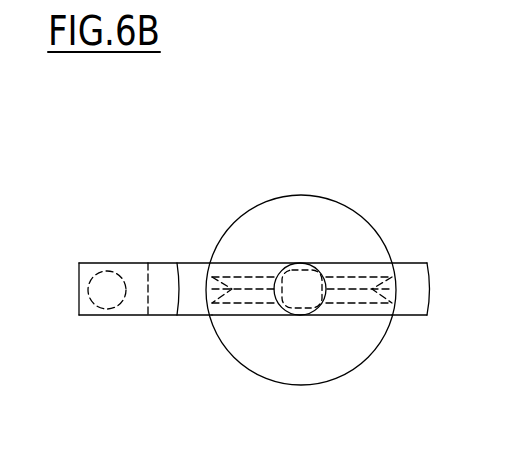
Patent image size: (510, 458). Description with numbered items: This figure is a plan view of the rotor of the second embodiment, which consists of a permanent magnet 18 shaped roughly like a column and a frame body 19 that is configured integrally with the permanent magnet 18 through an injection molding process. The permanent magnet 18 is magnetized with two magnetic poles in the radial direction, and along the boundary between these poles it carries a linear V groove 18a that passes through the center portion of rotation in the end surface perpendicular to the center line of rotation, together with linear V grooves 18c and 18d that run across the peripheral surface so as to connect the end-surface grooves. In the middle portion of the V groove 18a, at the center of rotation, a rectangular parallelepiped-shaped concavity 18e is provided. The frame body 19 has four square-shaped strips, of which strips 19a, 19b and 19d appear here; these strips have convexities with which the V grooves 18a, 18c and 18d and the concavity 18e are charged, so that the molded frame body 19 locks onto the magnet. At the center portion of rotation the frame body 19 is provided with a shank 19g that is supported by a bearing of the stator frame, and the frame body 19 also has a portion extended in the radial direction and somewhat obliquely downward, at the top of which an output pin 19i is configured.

The permanent magnet 18 is at (355, 196).
The linear V groove 18a is at (263, 283).
The linear V groove 18c is at (217, 292).
The linear V groove 18d is at (398, 289).
The rectangular parallelepiped-shaped concavity 18e is at (325, 278).
The frame body 19 is at (197, 252).
The strip 19a is at (254, 312).
The strip 19b is at (415, 308).
The strip 19d is at (199, 312).
The shank 19g is at (305, 293).
The output pin 19i is at (107, 298).